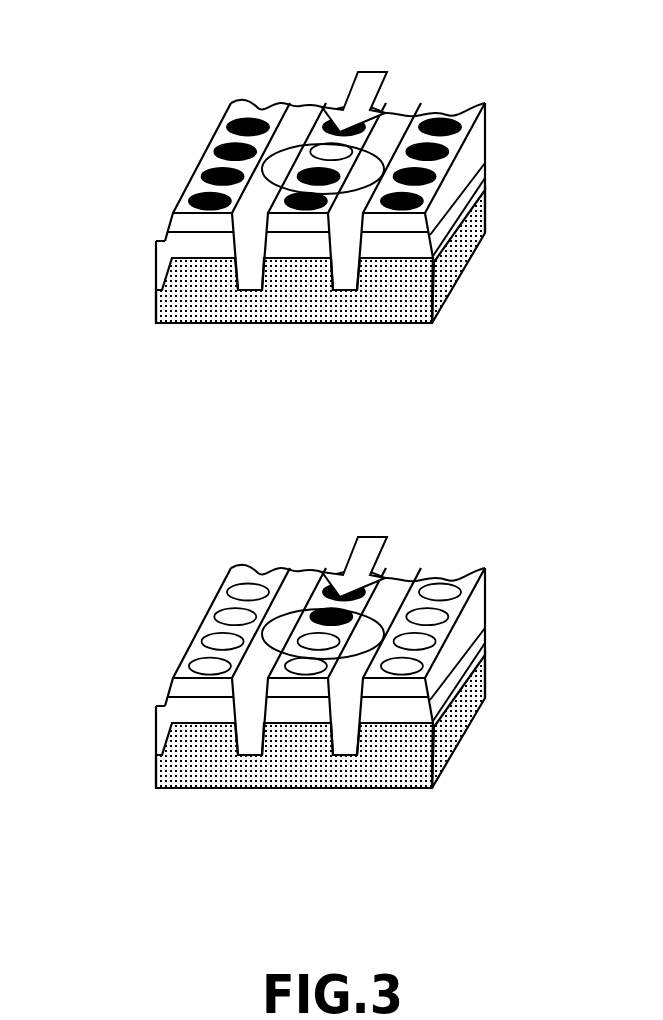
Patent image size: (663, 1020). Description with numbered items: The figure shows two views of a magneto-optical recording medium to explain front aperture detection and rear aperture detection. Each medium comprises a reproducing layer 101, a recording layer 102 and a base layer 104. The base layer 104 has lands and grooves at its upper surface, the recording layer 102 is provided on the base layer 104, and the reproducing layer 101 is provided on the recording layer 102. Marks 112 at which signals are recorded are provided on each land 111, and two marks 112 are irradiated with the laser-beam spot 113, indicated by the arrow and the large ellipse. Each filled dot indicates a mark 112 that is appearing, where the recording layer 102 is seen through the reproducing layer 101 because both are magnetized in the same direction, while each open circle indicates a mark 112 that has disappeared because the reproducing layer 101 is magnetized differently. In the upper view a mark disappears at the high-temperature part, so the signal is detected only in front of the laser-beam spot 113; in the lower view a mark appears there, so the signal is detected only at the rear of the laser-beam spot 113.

The reproducing layer 101 is at (487, 162).
The recording layer 102 is at (487, 182).
The base layer 104 is at (487, 210).
The land 111 is at (289, 205).
The marks 112 is at (189, 200).
The laser-beam spot 113 is at (303, 147).